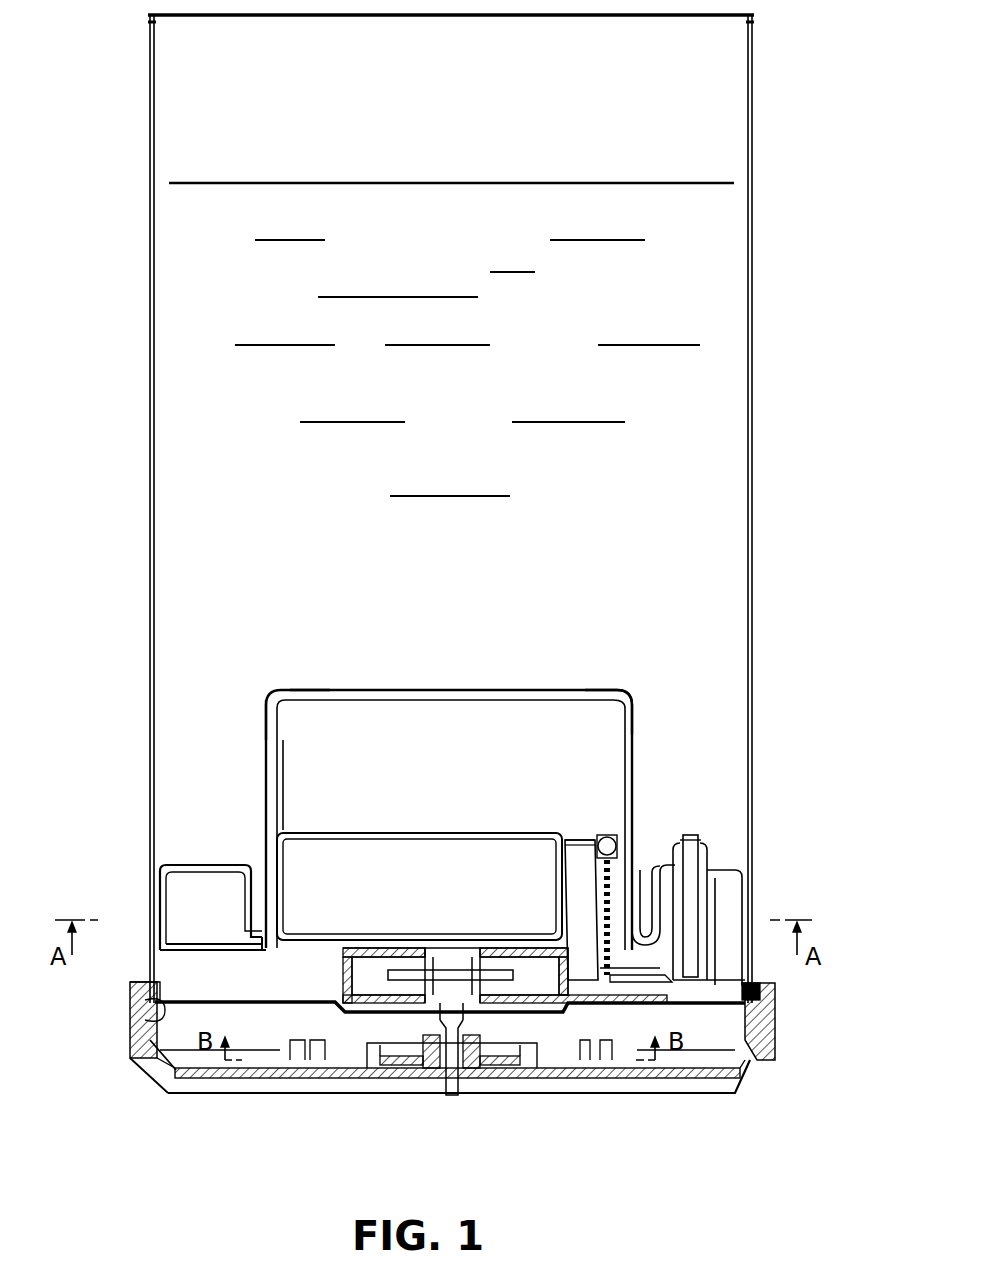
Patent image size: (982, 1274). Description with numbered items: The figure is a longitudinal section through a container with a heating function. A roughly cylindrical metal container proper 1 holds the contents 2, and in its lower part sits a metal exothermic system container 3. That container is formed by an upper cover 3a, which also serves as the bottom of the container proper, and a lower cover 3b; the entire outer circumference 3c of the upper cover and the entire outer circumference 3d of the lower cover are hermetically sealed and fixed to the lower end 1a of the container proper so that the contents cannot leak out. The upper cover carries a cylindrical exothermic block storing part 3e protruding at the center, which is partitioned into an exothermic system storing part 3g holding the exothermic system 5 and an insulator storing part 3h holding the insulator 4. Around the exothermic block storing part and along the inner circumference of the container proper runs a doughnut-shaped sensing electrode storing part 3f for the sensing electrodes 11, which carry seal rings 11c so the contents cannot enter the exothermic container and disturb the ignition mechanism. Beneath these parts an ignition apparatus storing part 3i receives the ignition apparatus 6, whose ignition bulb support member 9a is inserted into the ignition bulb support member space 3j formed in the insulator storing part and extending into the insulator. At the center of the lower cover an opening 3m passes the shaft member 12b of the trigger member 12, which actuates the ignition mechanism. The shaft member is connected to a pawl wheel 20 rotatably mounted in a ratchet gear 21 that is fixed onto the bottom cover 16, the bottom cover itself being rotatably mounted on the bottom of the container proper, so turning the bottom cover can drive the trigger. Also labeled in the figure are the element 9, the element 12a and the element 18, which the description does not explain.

The container proper 1 is at (767, 454).
The lower end of the container proper 1a is at (772, 1045).
The contents 2 is at (712, 248).
The exothermic system container 3 is at (335, 680).
The upper cover 3a is at (305, 690).
The lower cover 3b is at (240, 1000).
The outer circumference of the upper cover 3c is at (155, 970).
The outer circumference of the lower cover 3d is at (130, 1022).
The exothermic block storing part 3e is at (266, 705).
The sensing electrode storing part 3f is at (640, 870).
The exothermic system storing part 3g is at (600, 690).
The insulator storing part 3h is at (298, 940).
The ignition apparatus storing part 3i is at (148, 1058).
The ignition bulb support member space 3j is at (582, 842).
The opening 3m is at (478, 1000).
The insulator 4 is at (305, 858).
The exothermic system 5 is at (320, 752).
The ignition apparatus 6 is at (628, 1003).
The ball valve 9 is at (612, 835).
The ignition bulb support member 9a is at (570, 840).
The sensing electrodes 11 is at (705, 824).
The seal rings 11c is at (647, 870).
The trigger member 12 is at (468, 998).
The rotor plate 12a is at (400, 980).
The shaft member 12b is at (452, 1095).
The bottom cover 16 is at (675, 1075).
The liquid level 18 is at (207, 183).
The pawl wheel 20 is at (440, 1068).
The ratchet gear 21 is at (350, 1050).